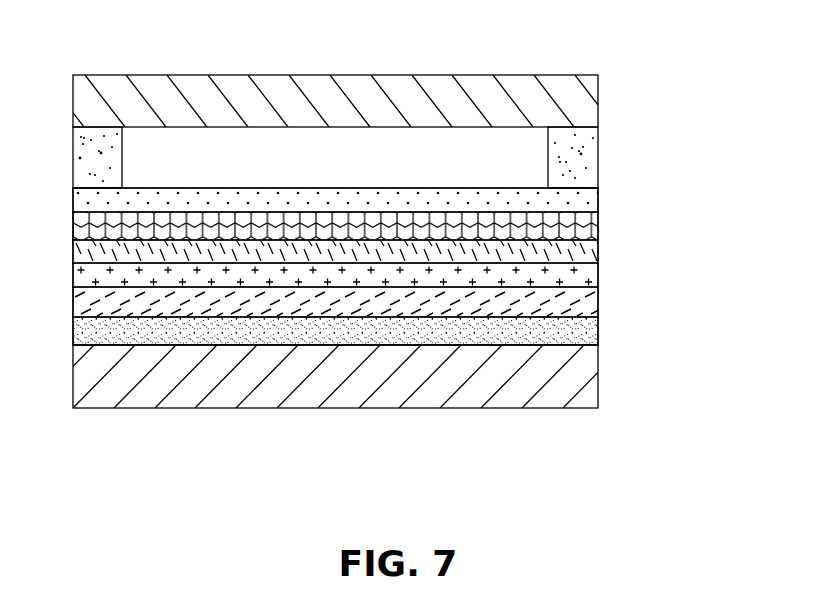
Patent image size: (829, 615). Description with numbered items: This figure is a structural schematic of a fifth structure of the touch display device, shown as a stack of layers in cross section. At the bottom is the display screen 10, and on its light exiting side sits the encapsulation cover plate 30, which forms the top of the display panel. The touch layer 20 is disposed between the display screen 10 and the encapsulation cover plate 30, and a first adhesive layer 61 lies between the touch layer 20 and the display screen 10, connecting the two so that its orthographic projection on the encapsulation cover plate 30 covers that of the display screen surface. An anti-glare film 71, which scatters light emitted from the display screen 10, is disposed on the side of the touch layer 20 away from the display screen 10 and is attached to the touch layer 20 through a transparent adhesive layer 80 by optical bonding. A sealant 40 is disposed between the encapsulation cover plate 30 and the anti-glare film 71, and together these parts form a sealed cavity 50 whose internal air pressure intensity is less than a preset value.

The display screen 10 is at (573, 373).
The touch layer 20 is at (617, 271).
The encapsulation cover plate 30 is at (553, 105).
The sealant 40 is at (572, 150).
The sealed cavity 50 is at (120, 158).
The first adhesive layer 61 is at (398, 330).
The anti-glare film 71 is at (358, 200).
The transparent adhesive layer 80 is at (245, 228).